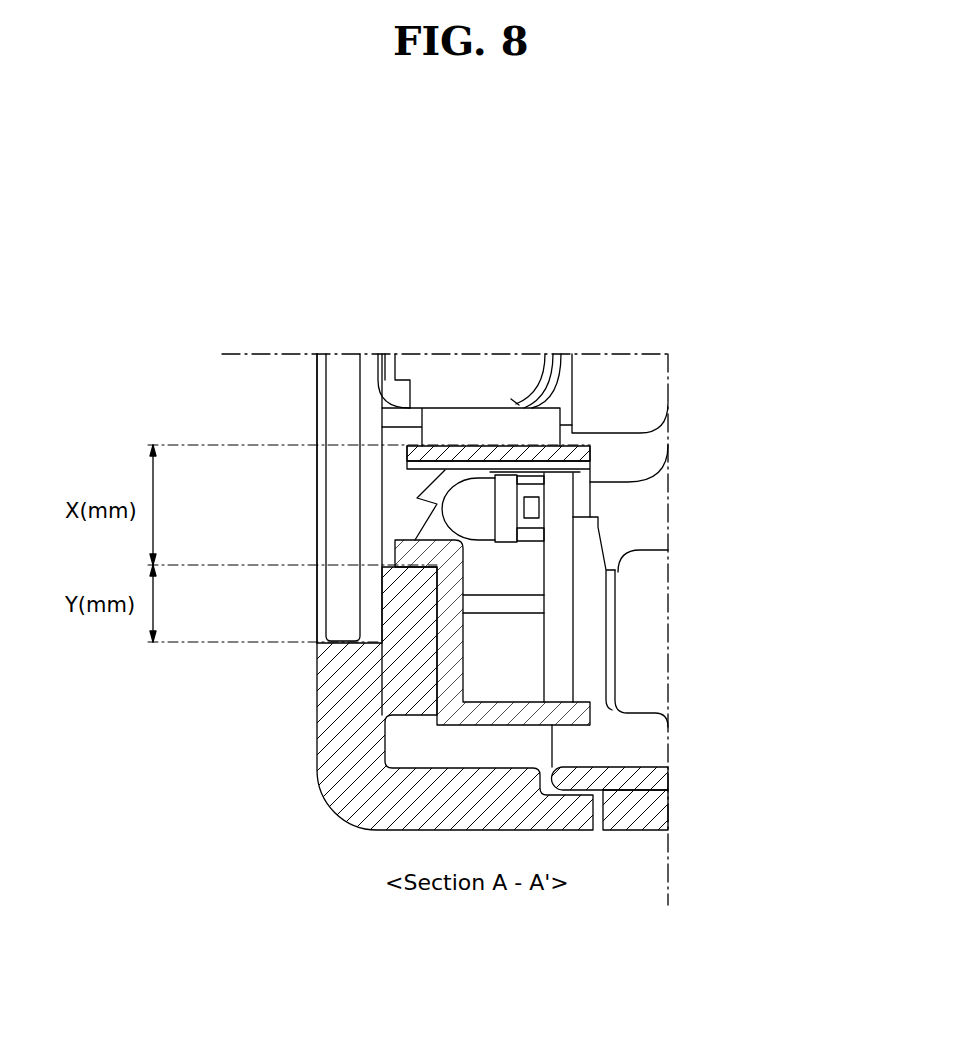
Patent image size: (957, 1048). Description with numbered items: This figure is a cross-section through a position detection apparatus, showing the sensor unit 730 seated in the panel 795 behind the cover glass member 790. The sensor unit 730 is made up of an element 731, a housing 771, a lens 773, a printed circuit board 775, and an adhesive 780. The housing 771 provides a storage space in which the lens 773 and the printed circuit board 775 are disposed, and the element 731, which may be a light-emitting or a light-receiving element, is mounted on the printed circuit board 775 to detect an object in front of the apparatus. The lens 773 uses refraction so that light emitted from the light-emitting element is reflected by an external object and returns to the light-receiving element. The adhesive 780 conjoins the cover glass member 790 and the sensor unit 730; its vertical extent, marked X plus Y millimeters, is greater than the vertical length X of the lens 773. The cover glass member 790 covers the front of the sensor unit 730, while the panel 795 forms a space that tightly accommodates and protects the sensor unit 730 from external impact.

The sensor unit 730 is at (807, 230).
The element 731 is at (475, 500).
The housing 771 is at (593, 720).
The lens 773 is at (395, 455).
The printed circuit board 775 is at (560, 503).
The adhesive 780 is at (375, 500).
The cover glass member 790 is at (338, 540).
The panel 795 is at (333, 690).